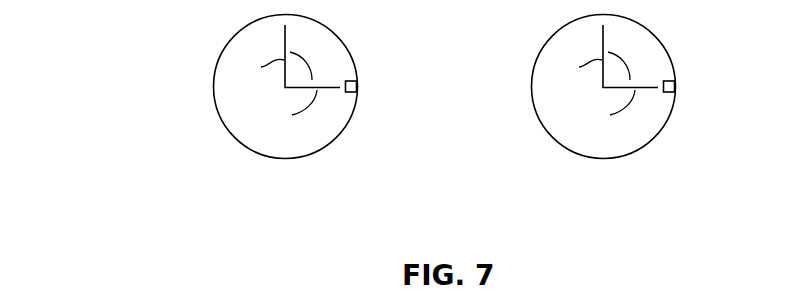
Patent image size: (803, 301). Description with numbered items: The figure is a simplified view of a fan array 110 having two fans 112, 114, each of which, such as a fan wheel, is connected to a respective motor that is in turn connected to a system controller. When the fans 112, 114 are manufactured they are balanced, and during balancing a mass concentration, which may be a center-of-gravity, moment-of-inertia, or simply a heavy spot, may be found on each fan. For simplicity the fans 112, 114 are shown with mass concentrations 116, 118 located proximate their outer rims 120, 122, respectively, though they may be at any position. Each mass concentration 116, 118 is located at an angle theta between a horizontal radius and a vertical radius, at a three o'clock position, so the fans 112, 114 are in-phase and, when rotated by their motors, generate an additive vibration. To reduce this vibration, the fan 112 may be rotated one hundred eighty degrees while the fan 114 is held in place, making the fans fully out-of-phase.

The fan array 110 is at (128, 28).
The fan 112 is at (221, 121).
The fan 114 is at (608, 158).
The mass concentration 116 is at (356, 80).
The mass concentration 118 is at (675, 79).
The outer rim 120 is at (352, 115).
The outer rim 122 is at (673, 102).